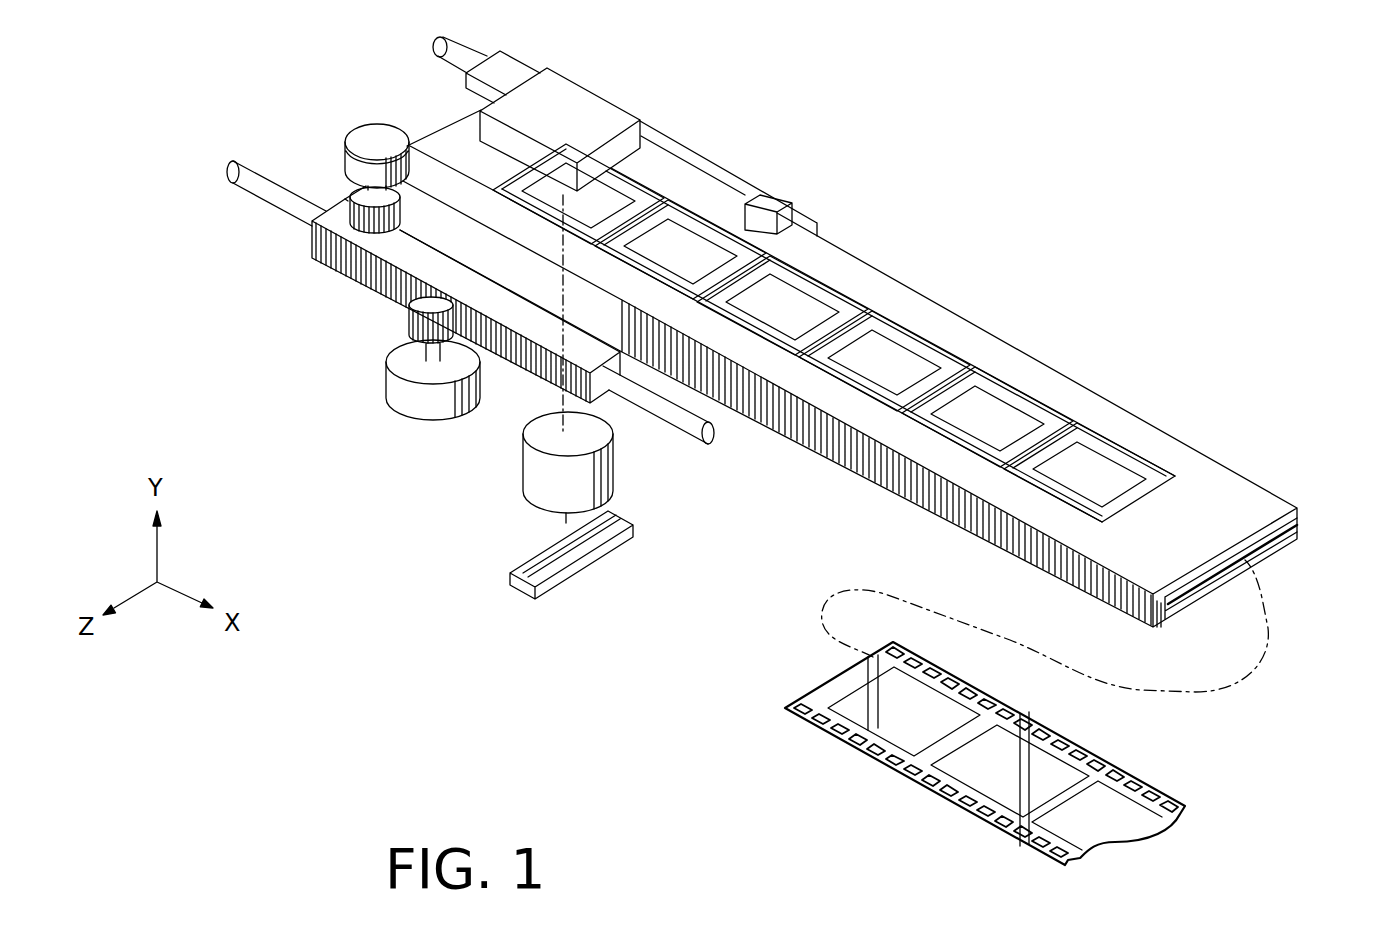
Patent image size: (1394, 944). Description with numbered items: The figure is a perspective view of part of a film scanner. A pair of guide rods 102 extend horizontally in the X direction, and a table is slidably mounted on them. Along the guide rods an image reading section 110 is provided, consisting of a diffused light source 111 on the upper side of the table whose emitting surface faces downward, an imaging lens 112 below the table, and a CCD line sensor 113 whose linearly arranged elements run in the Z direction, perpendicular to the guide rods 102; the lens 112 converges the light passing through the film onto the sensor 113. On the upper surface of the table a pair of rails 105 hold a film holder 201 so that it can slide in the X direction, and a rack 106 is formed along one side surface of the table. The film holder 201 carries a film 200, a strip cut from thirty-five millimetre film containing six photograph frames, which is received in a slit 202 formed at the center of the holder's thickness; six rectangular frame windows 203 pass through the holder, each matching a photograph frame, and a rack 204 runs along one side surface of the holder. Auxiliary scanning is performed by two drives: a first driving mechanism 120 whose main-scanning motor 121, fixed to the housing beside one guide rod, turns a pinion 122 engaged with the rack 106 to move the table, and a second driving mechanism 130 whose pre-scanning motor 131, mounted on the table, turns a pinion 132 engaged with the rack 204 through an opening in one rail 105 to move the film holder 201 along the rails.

The guide rods 102 is at (693, 428).
The rails 105 is at (745, 205).
The rack 106 is at (324, 258).
The image reading section 110 is at (676, 144).
The diffused light source 111 is at (606, 110).
The imaging lens 112 is at (532, 478).
The CCD line sensor 113 is at (567, 562).
The first driving mechanism 120 is at (376, 389).
The main-scanning motor 121 is at (426, 405).
The pinion 122 is at (408, 320).
The second driving mechanism 130 is at (341, 108).
The pre-scanning motor 131 is at (416, 102).
The pinion 132 is at (344, 211).
The film 200 is at (937, 798).
The film holder 201 is at (1057, 384).
The slit 202 is at (1262, 548).
The frame windows 203 is at (886, 368).
The rack 204 is at (910, 484).